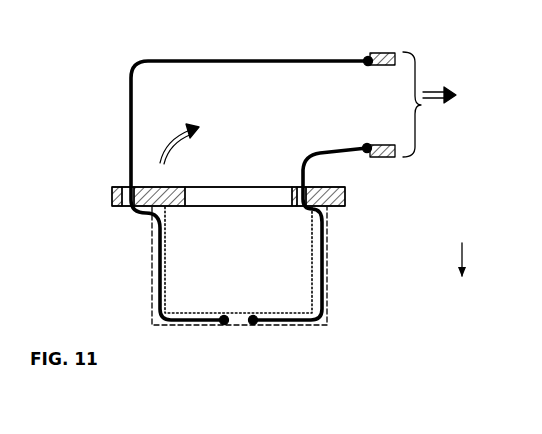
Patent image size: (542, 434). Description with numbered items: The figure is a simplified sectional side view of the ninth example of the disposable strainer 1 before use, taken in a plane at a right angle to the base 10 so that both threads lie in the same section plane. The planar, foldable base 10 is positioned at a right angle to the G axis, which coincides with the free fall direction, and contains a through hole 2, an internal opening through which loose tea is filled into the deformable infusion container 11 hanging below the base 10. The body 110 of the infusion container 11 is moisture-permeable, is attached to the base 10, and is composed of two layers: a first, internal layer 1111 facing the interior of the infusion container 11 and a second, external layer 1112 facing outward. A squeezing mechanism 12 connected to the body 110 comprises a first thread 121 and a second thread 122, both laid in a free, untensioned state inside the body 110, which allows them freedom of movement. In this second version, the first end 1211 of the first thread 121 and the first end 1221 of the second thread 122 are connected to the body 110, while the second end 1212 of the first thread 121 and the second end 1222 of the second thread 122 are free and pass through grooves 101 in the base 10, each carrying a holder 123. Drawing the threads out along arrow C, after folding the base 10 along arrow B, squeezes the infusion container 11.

The disposable strainer 1 is at (355, 335).
The base 10 is at (113, 199).
The grooves 101 is at (125, 183).
The through hole 2 is at (238, 197).
The infusion container 11 is at (200, 231).
The first layer 1111 is at (170, 253).
The second layer 1112 is at (149, 275).
The body 110 is at (242, 322).
The squeezing mechanism 12 is at (339, 82).
The first thread 121 is at (313, 151).
The second thread 122 is at (190, 59).
The holders 123 is at (381, 50).
The first end of the first thread 1211 is at (253, 310).
The second end of the first thread 1212 is at (366, 159).
The first end of the second thread 1221 is at (222, 327).
The second end of the second thread 1222 is at (362, 59).